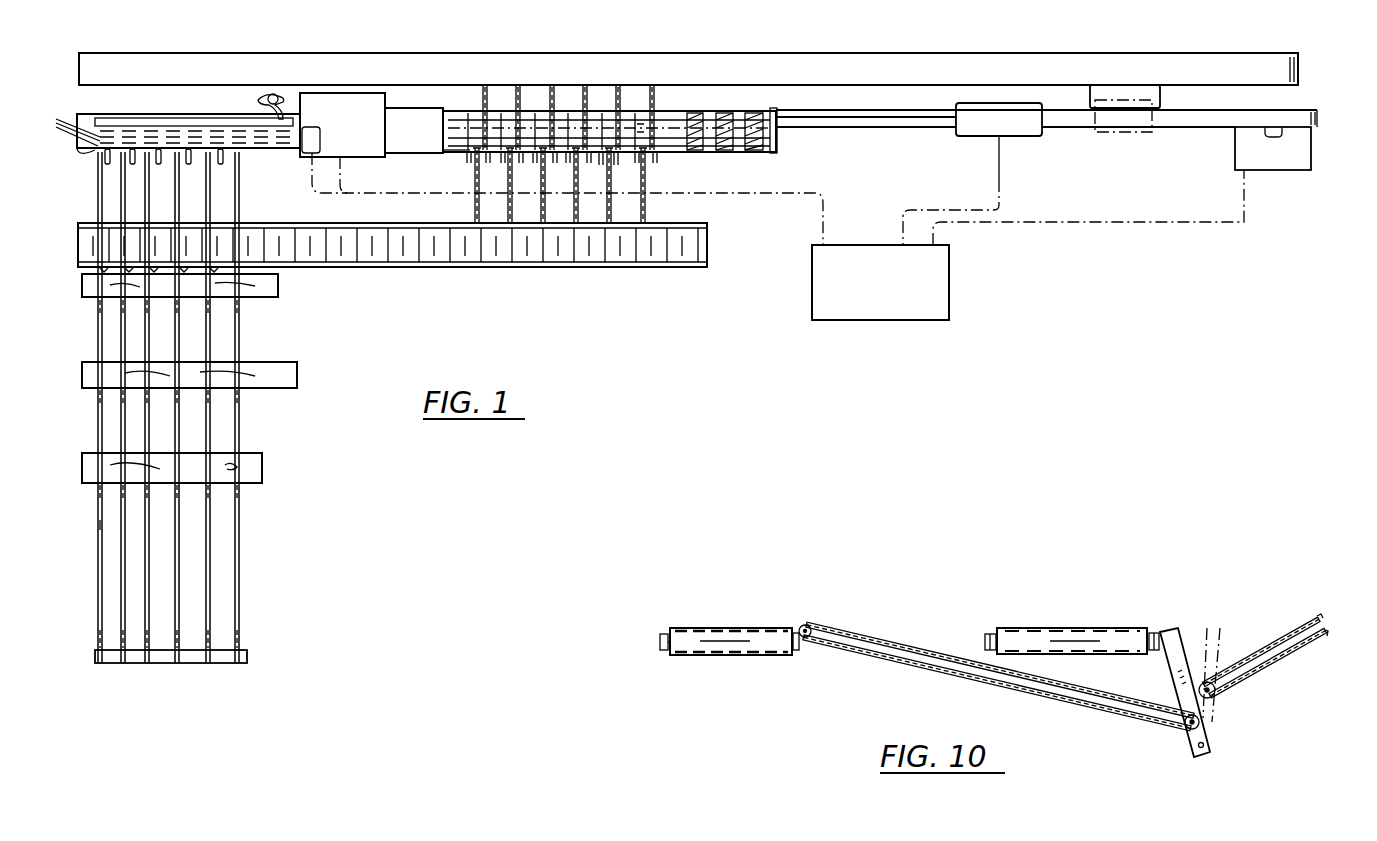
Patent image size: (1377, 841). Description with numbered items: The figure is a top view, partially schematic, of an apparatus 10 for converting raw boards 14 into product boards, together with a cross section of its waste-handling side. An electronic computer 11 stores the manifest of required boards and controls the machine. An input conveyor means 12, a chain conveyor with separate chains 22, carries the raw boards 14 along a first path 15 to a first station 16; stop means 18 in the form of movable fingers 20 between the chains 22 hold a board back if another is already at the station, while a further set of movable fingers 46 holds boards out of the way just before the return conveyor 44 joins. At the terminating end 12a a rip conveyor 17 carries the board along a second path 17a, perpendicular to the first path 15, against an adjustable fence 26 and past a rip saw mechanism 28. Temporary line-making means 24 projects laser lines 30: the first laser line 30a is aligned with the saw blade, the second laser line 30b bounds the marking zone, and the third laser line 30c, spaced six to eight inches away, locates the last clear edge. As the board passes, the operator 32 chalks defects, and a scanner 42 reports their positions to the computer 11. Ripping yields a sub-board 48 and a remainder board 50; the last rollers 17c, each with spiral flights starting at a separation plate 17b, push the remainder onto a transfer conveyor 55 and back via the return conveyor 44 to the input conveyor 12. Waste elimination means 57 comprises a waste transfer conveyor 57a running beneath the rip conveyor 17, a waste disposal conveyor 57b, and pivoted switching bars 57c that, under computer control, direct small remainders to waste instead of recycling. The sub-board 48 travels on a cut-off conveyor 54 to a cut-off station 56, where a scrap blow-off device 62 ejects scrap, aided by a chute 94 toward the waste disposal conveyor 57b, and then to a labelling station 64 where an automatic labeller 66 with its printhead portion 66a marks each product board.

In FIG. 1, the apparatus 10 is at (608, 271).
In FIG. 1, the electronic computer 11 is at (949, 265).
In FIG. 1, the input conveyor means 12 is at (250, 600).
In FIG. 1, the terminating end 12a is at (95, 151).
In FIG. 1, the raw boards 14 is at (268, 296).
In FIG. 1, the first path 15 is at (86, 400).
In FIG. 1, the first station 16 is at (296, 90).
In FIG. 1, the rip conveyor 17 is at (460, 150).
In FIG. 10, the rip conveyor 17 is at (1138, 620).
In FIG. 1, the second path 17a is at (127, 100).
In FIG. 1, the separation plate 17b is at (641, 128).
In FIG. 1, the rollers 17c is at (765, 110).
In FIG. 1, the stop means 18 is at (108, 166).
In FIG. 1, the movable fingers 20 is at (78, 150).
In FIG. 1, the chains 22 is at (144, 530).
In FIG. 1, the temporary line-making means 24 is at (308, 148).
In FIG. 1, the adjustable fence 26 is at (117, 116).
In FIG. 1, the rip saw mechanism 28 is at (359, 157).
In FIG. 1, the laser lines 30 is at (62, 129).
In FIG. 1, the first laser line 30a is at (148, 130).
In FIG. 1, the second laser line 30b is at (182, 135).
In FIG. 1, the third laser line 30c is at (263, 143).
In FIG. 1, the operator 32 is at (272, 95).
In FIG. 1, the scanner 42 is at (400, 110).
In FIG. 1, the return conveyor 44 is at (689, 268).
In FIG. 1, the movable fingers 46 is at (130, 274).
In FIG. 1, the sub-board 48 is at (678, 110).
In FIG. 1, the remainder board 50 is at (686, 148).
In FIG. 1, the cut-off conveyor 54 is at (881, 126).
In FIG. 1, the transfer conveyor 55 is at (652, 212).
In FIG. 10, the transfer conveyor 55 is at (1282, 640).
In FIG. 1, the cut-off station 56 is at (973, 137).
In FIG. 1, the waste elimination means 57 is at (672, 100).
In FIG. 1, the waste transfer conveyor 57a is at (615, 93).
In FIG. 10, the waste transfer conveyor 57a is at (875, 636).
In FIG. 1, the waste disposal conveyor 57b is at (556, 40).
In FIG. 10, the waste disposal conveyor 57b is at (735, 624).
In FIG. 1, the switching bars 57c is at (610, 162).
In FIG. 10, the switching bars 57c is at (1177, 630).
In FIG. 1, the scrap blow-off device 62 is at (1128, 133).
In FIG. 1, the labelling station 64 is at (1297, 170).
In FIG. 1, the automatic labeller 66 is at (1235, 162).
In FIG. 1, the printhead portion 66a is at (1280, 136).
In FIG. 1, the chute 94 is at (1088, 97).